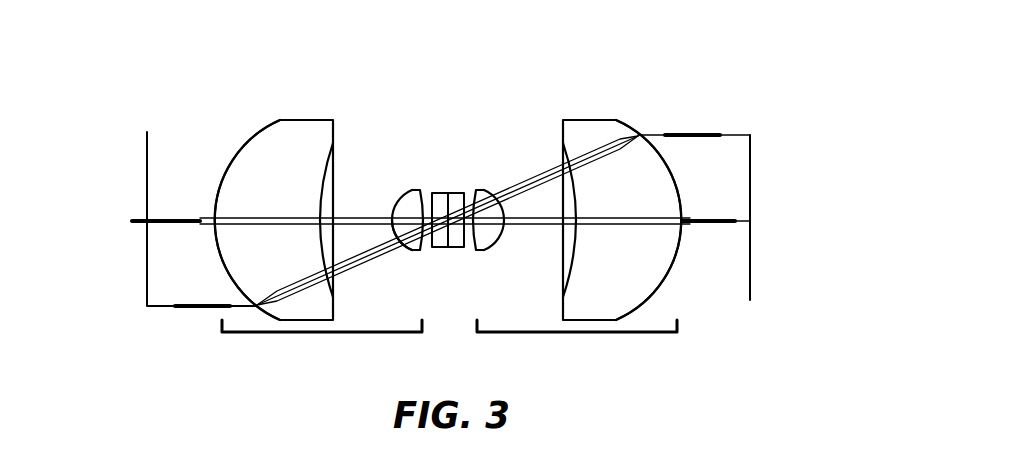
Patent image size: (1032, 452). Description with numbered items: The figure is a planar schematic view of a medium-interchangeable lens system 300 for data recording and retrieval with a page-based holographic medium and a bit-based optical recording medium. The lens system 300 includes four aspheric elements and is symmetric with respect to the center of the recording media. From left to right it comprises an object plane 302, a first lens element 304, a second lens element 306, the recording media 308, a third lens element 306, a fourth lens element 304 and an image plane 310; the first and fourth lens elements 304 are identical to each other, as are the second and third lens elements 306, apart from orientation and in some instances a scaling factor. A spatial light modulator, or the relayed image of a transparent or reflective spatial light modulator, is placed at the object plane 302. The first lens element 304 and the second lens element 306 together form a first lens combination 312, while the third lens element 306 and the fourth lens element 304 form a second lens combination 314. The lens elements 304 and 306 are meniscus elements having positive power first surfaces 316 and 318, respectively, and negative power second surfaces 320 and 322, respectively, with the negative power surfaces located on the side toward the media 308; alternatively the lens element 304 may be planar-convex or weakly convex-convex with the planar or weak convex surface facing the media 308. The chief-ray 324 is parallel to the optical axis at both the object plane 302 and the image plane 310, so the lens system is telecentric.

The medium-interchangeable lens system 300 is at (97, 70).
The object plane 302 is at (147, 132).
The first lens element / fourth lens element 304 is at (462, 183).
The second lens element / third lens element 306 is at (445, 217).
The recording media 308 is at (448, 193).
The image plane 310 is at (750, 300).
The first lens combination 312 is at (322, 332).
The second lens combination 314 is at (577, 332).
The positive power first surface of lens element 304 316 is at (243, 150).
The positive power first surface of lens element 306 318 is at (394, 236).
The negative power second surface of lens element 304 320 is at (325, 173).
The negative power second surface of lens element 306 322 is at (423, 226).
The chief-ray 324 is at (398, 248).